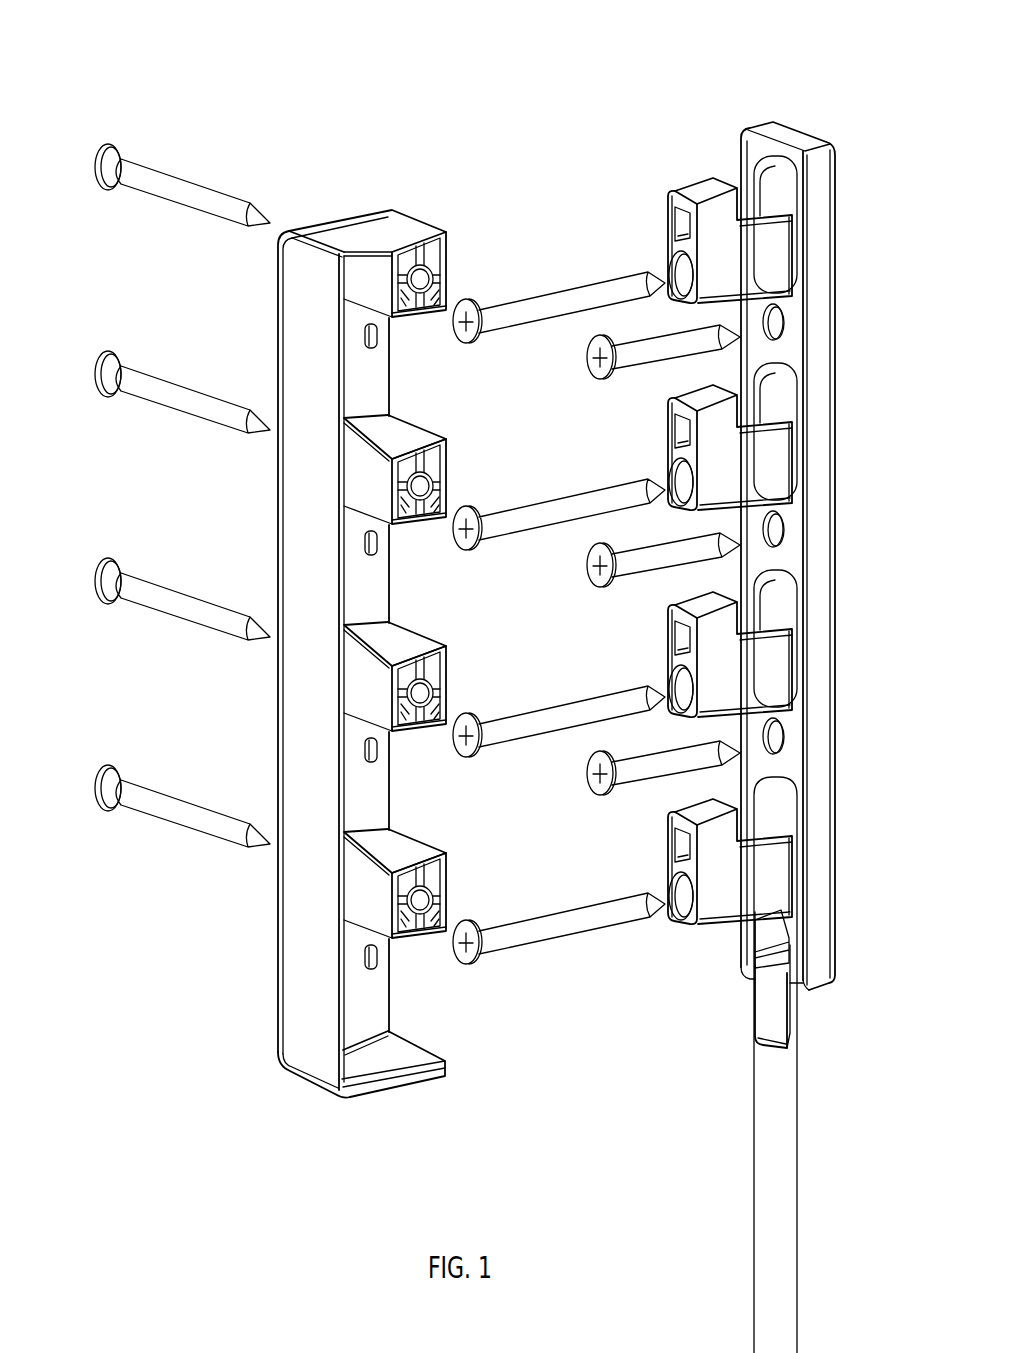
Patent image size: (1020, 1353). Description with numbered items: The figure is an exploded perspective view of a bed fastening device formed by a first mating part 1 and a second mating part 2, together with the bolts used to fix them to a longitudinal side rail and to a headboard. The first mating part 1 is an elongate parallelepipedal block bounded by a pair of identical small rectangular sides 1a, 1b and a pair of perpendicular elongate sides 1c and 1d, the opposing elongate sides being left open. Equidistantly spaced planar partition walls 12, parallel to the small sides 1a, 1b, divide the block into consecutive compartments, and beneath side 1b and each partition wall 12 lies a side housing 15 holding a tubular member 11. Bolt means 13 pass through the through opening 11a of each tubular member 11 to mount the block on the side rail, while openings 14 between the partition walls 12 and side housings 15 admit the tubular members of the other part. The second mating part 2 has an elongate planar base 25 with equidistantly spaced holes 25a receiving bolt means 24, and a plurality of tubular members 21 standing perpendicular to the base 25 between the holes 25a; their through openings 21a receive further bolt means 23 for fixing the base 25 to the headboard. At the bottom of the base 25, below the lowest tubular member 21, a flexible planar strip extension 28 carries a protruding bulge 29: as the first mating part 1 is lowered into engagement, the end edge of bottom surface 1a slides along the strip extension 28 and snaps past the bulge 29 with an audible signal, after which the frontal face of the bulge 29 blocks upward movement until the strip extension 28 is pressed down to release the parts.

The first mating part 1 is at (296, 602).
The small rectangular side 1a is at (403, 1082).
The small rectangular side 1b is at (390, 225).
The elongate side 1c is at (358, 375).
The elongate side 1d is at (305, 973).
The tubular member 11 is at (422, 280).
The through opening 11a is at (443, 272).
The planar partition wall 12 is at (390, 437).
The bolt means 13 is at (160, 183).
The opening 14 is at (398, 386).
The side housing 15 is at (443, 328).
The second mating part 2 is at (718, 693).
The tubular member 21 is at (713, 195).
The through opening 21a is at (684, 286).
The further bolt means 23 is at (595, 293).
The bolt means 24 is at (650, 347).
The elongate planar base 25 is at (817, 248).
The hole 25a is at (778, 330).
The flexible planar strip extension 28 is at (793, 1028).
The protruding bulge 29 is at (768, 948).